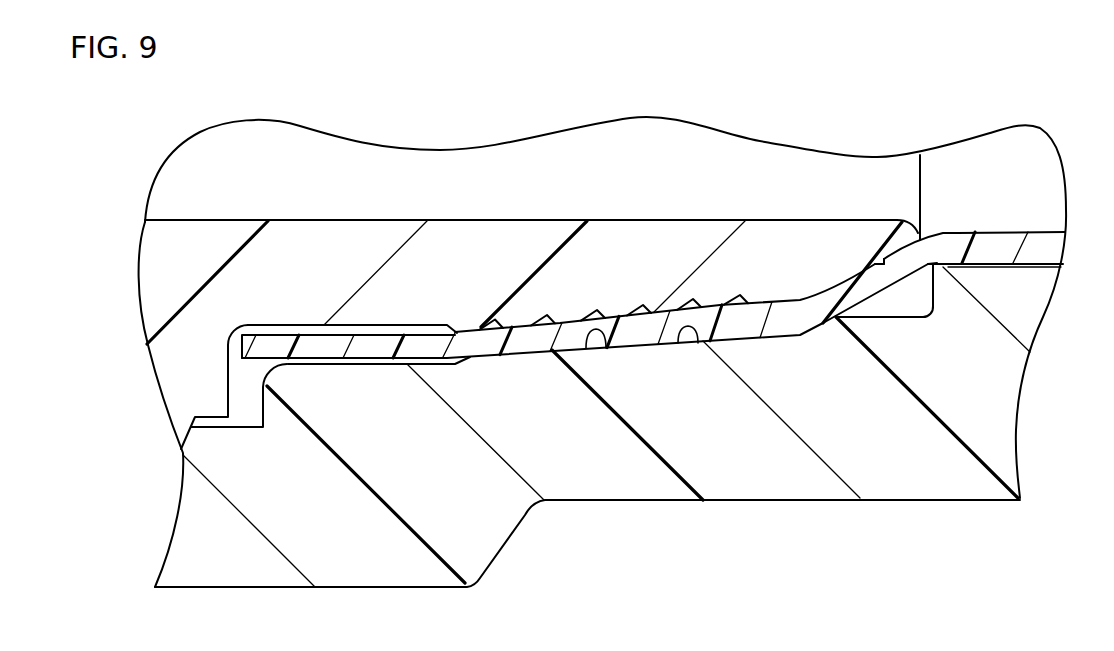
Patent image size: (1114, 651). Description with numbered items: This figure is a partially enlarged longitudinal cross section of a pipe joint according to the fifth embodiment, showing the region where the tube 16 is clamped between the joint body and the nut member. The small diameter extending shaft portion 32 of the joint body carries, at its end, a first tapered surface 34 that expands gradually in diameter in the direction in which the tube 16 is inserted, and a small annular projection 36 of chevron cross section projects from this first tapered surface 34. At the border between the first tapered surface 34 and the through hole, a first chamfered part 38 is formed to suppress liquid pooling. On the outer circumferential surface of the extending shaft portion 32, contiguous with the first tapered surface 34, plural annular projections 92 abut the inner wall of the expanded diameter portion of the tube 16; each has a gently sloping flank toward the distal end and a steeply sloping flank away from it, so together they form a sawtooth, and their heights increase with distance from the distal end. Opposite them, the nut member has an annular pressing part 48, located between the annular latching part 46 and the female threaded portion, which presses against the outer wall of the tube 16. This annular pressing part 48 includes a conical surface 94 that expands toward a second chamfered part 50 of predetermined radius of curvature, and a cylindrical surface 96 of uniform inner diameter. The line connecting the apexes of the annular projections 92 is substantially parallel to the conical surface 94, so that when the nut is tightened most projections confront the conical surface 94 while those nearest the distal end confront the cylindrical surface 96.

The tube 16 is at (1005, 243).
The extending shaft portion 32 is at (550, 205).
The first tapered surface 34 is at (882, 248).
The small annular projection 36 is at (880, 260).
The first chamfered part 38 is at (911, 217).
The annular latching part 46 is at (938, 262).
The annular pressing part 48 is at (573, 343).
The second chamfered part 50 is at (263, 387).
The annular projections 92 is at (605, 316).
The conical surface 94 is at (607, 347).
The cylindrical surface 96 is at (683, 345).